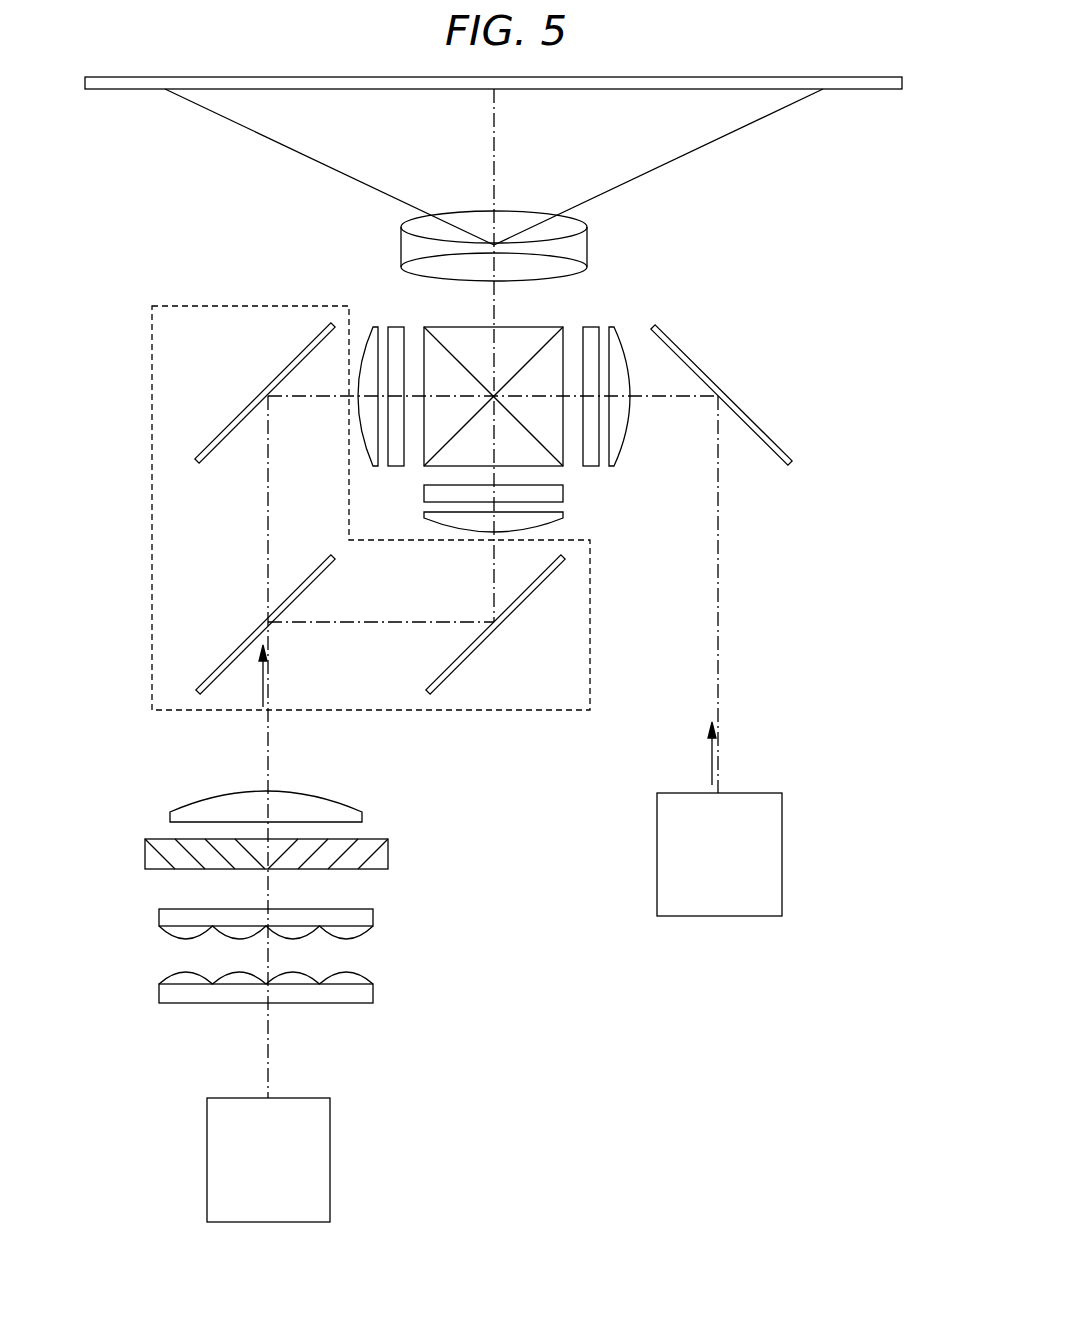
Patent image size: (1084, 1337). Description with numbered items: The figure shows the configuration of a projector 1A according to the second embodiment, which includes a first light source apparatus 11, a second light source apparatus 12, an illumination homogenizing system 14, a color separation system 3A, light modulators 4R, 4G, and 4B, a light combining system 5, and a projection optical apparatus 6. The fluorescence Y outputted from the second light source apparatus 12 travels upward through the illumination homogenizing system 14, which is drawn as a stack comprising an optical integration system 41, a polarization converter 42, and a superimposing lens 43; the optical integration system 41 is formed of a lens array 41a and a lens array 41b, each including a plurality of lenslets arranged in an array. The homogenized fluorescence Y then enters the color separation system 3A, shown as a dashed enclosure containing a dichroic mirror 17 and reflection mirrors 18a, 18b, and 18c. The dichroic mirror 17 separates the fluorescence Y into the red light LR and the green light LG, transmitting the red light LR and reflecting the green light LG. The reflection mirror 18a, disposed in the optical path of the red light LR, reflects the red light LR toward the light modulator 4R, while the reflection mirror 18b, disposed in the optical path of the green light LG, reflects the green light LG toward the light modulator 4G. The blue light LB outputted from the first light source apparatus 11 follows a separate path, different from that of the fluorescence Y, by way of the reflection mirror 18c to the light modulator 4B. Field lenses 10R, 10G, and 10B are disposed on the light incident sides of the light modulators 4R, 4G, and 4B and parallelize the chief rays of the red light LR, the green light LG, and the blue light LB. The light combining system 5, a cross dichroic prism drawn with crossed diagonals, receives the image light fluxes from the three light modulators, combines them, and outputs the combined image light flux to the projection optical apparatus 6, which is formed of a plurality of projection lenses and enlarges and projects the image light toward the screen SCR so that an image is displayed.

The projector 1A is at (848, 278).
The screen SCR is at (868, 90).
The projection optical apparatus 6 is at (477, 213).
The light combining system 5 is at (515, 337).
The light modulator 4R is at (396, 326).
The light modulator 4G is at (424, 494).
The light modulator 4B is at (591, 326).
The field lens 10R is at (370, 326).
The field lens 10G is at (440, 518).
The field lens 10B is at (620, 326).
The reflection mirror 18a is at (240, 420).
The reflection mirror 18b is at (470, 657).
The reflection mirror 18c is at (748, 410).
The dichroic mirror 17 is at (232, 652).
The color separation system 3A is at (152, 453).
The illumination homogenizing system 14 is at (355, 900).
The superimposing lens 43 is at (340, 802).
The polarization converter 42 is at (388, 855).
The optical integration system 41 is at (334, 959).
The lens array 41a is at (373, 980).
The lens array 41b is at (373, 934).
The first light source apparatus 11 is at (782, 885).
The second light source apparatus 12 is at (330, 1158).
The red light LR is at (267, 532).
The green light LG is at (493, 578).
The blue light LB is at (720, 527).
The fluorescence Y is at (262, 693).